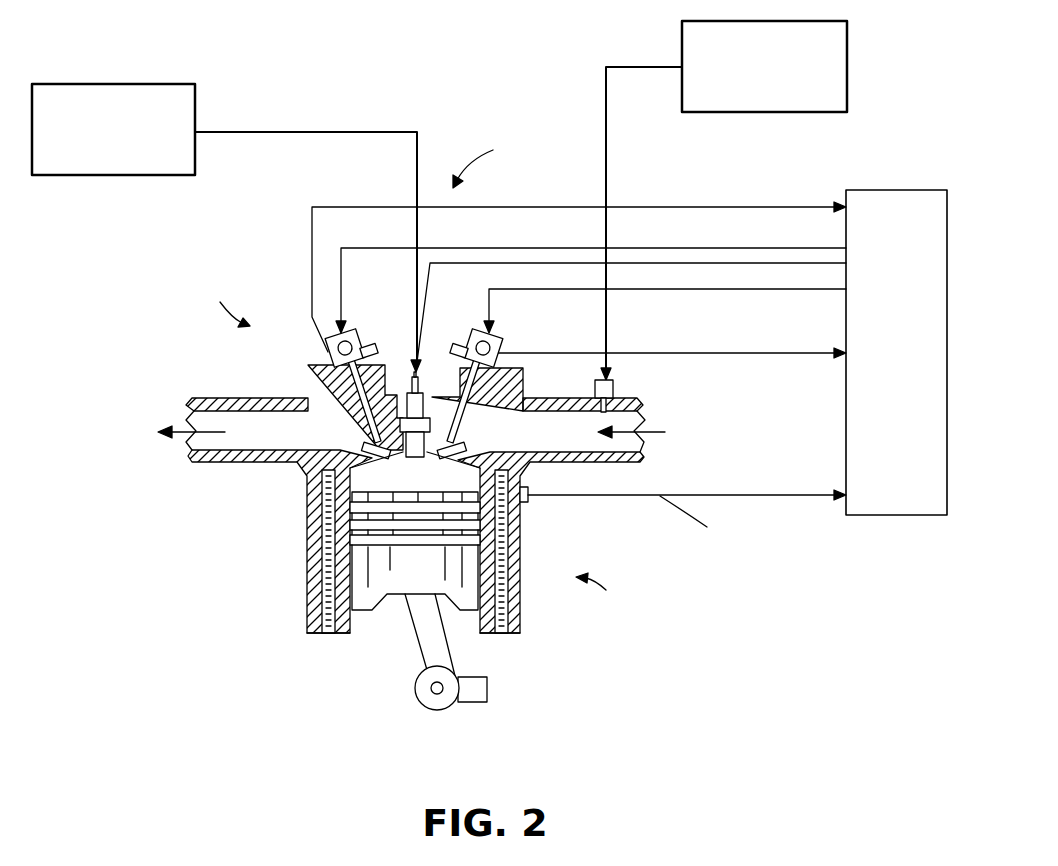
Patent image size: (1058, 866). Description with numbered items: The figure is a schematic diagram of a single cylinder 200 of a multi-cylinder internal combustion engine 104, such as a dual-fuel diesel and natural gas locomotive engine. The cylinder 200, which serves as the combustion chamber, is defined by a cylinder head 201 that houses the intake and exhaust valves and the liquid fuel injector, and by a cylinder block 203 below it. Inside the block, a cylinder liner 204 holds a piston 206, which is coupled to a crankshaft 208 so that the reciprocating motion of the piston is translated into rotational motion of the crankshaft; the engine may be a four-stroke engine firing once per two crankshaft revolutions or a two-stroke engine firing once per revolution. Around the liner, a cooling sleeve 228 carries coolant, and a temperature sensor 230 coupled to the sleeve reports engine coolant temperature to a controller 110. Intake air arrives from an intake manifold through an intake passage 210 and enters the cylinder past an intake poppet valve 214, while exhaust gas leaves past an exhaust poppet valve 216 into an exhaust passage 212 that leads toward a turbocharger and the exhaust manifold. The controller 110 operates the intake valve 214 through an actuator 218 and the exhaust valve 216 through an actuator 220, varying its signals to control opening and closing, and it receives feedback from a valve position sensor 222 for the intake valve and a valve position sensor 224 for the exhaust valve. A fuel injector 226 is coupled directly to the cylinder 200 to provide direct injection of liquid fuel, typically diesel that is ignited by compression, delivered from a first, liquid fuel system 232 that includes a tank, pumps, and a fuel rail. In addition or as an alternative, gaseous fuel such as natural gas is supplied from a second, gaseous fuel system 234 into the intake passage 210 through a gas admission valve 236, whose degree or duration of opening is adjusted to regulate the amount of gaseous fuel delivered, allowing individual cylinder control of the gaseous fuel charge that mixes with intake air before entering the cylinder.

The engine 104 is at (492, 163).
The controller 110 is at (896, 352).
The cylinder 200 is at (402, 406).
The cylinder head 201 is at (219, 303).
The cylinder block 203 is at (606, 597).
The cylinder liner 204 is at (352, 630).
The piston 206 is at (397, 580).
The crankshaft 208 is at (460, 675).
The intake passage 210 is at (623, 515).
The exhaust passage 212 is at (204, 515).
The intake poppet valve 214 is at (485, 438).
The exhaust poppet valve 216 is at (363, 443).
The actuator 218 is at (470, 322).
The actuator 220 is at (353, 322).
The valve position sensor 222 is at (500, 362).
The valve position sensor 224 is at (327, 352).
The fuel injector 226 is at (628, 317).
The cooling sleeve 228 is at (503, 596).
The temperature sensor 230 is at (531, 505).
The liquid fuel system 232 is at (224, 223).
The gaseous fuel system 234 is at (724, 200).
The gas admission valve 236 is at (613, 386).